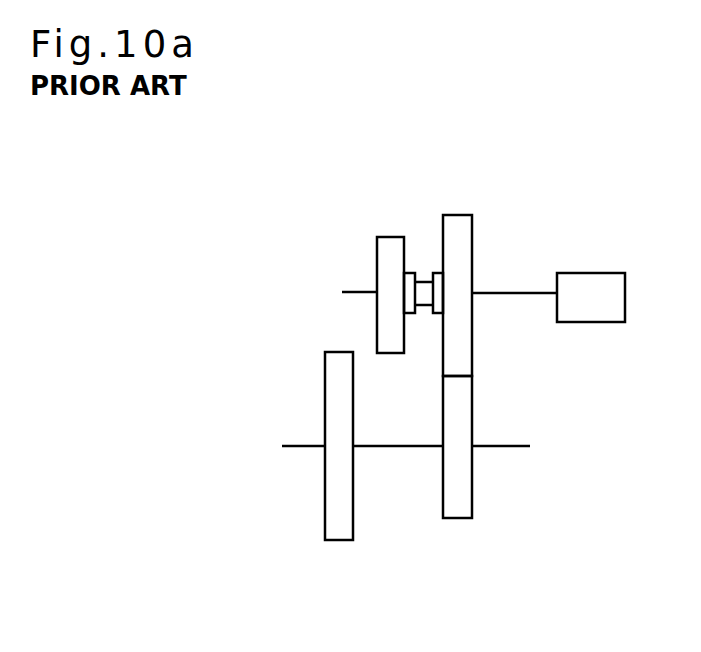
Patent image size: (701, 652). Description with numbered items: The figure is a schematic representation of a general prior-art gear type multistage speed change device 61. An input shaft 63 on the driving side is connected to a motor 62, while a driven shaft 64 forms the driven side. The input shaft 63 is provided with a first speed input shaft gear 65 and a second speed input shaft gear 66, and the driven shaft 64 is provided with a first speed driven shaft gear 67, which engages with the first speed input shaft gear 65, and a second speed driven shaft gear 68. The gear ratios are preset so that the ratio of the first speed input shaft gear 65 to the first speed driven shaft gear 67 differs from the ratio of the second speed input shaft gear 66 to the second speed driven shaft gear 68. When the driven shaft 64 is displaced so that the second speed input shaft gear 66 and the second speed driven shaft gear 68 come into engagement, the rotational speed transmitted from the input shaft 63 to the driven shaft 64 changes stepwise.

The gear type multistage speed change device 61 is at (549, 200).
The motor 62 is at (602, 272).
The input shaft 63 is at (510, 290).
The driven shaft 64 is at (492, 448).
The first speed input shaft gear 65 is at (462, 228).
The second speed input shaft gear 66 is at (392, 242).
The first speed driven shaft gear 67 is at (455, 510).
The second speed driven shaft gear 68 is at (340, 528).